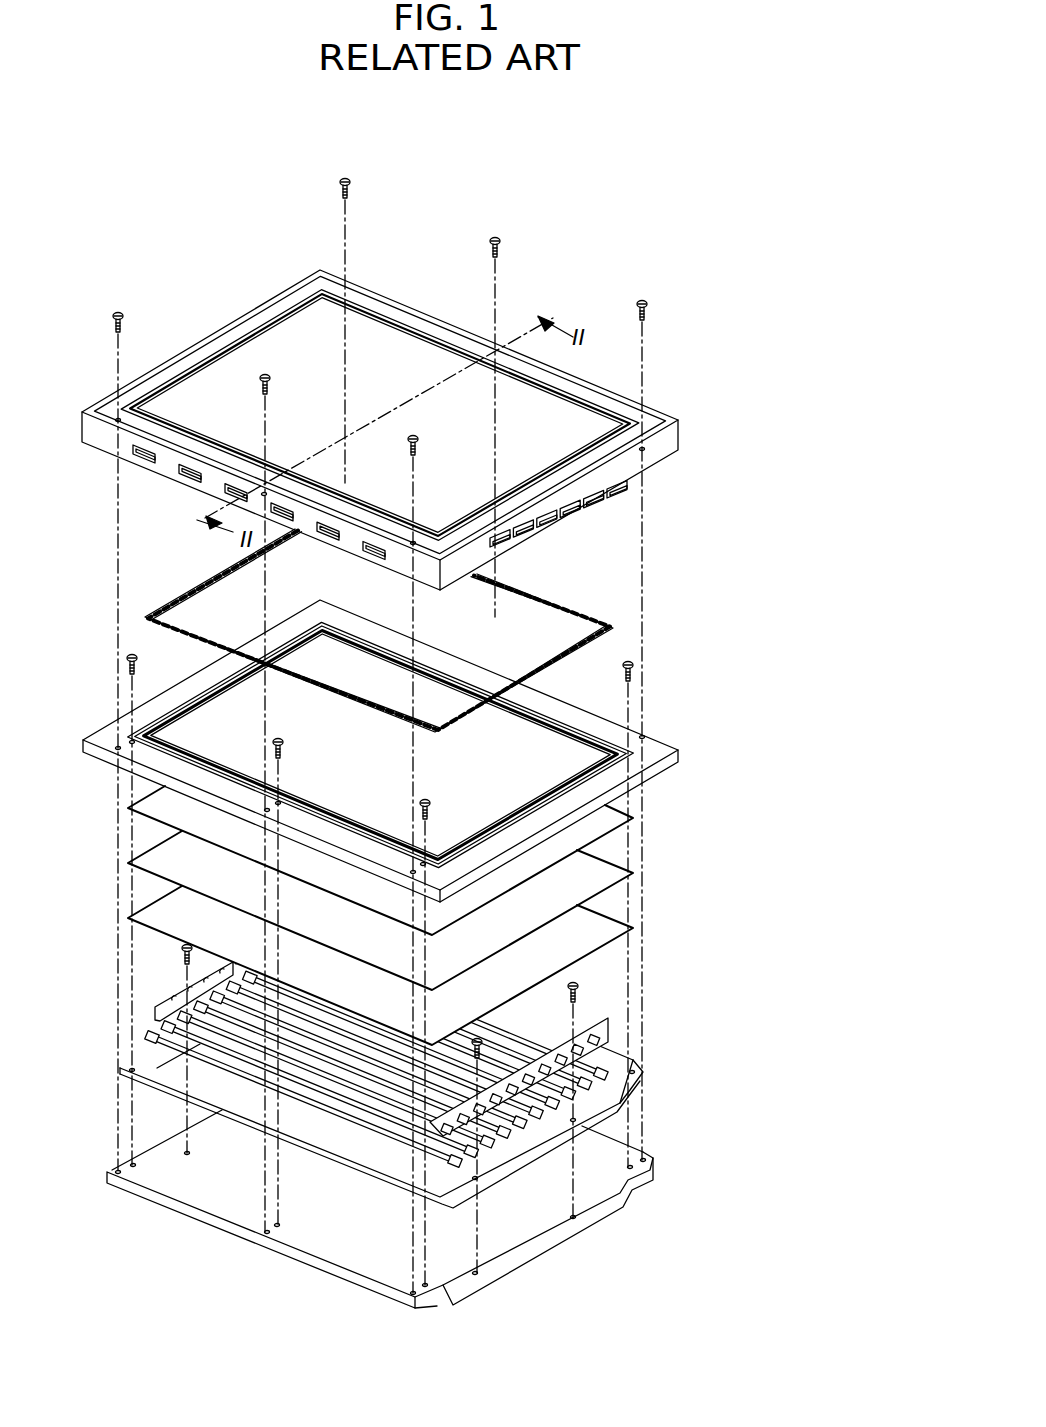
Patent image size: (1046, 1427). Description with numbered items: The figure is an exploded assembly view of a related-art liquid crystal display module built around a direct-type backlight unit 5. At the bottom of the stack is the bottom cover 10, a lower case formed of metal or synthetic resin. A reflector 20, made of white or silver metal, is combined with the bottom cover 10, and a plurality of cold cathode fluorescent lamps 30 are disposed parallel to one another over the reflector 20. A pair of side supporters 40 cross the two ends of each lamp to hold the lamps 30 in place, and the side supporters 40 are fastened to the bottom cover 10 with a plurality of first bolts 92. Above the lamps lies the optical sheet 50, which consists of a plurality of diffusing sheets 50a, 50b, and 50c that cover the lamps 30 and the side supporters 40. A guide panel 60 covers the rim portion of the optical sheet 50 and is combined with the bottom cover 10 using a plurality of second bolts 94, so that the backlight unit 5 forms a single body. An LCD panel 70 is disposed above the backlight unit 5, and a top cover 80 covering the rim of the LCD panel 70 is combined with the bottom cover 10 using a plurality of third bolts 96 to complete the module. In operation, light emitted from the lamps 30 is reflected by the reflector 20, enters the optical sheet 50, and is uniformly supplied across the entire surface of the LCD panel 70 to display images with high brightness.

The direct-type backlight unit 5 is at (762, 760).
The bottom cover 10 is at (650, 1200).
The reflector 20 is at (627, 1097).
The cold cathode fluorescent lamps 30 is at (600, 1060).
The side supporters 40 is at (155, 1008).
The optical sheet 50 is at (450, 867).
The diffusing sheet 50a is at (633, 820).
The diffusing sheet 50b is at (633, 873).
The diffusing sheet 50c is at (633, 928).
The guide panel 60 is at (680, 757).
The LCD panel 70 is at (610, 622).
The top cover 80 is at (682, 433).
The first bolts 92 is at (183, 960).
The second bolts 94 is at (138, 664).
The third bolts 96 is at (491, 250).